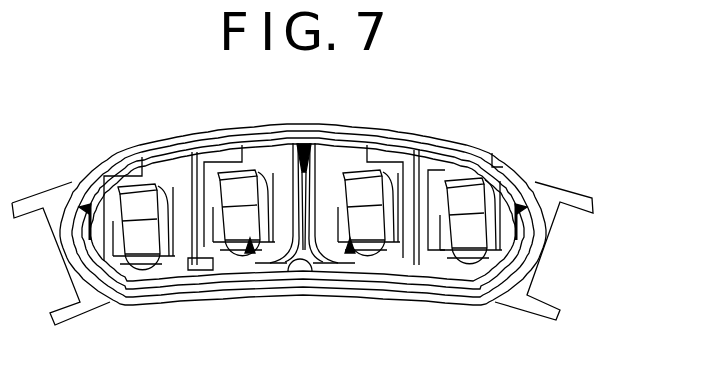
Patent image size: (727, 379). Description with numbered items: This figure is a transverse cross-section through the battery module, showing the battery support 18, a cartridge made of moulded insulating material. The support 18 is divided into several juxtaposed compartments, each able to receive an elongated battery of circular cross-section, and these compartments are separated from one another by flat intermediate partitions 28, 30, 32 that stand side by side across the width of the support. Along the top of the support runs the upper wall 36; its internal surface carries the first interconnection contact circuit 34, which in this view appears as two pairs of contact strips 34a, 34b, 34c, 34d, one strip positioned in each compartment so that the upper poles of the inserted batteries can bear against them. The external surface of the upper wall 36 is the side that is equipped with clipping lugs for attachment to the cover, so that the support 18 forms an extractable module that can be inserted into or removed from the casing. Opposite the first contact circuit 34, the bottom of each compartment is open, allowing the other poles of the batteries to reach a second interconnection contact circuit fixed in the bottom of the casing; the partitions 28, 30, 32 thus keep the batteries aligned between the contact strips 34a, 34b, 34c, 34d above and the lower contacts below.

The battery support 18 is at (530, 205).
The intermediate partition 28 is at (193, 270).
The intermediate partition 30 is at (297, 142).
The intermediate partition 32 is at (418, 290).
The first interconnection contact circuit 34 is at (350, 252).
The contact strip 34a is at (145, 247).
The contact strip 34b is at (241, 236).
The contact strip 34c is at (364, 237).
The contact strip 34d is at (466, 245).
The upper wall 36 is at (333, 162).